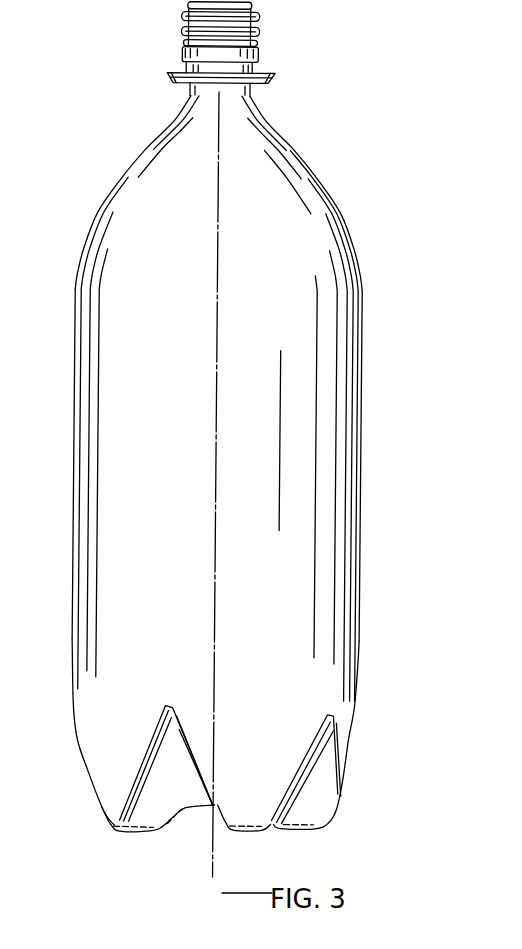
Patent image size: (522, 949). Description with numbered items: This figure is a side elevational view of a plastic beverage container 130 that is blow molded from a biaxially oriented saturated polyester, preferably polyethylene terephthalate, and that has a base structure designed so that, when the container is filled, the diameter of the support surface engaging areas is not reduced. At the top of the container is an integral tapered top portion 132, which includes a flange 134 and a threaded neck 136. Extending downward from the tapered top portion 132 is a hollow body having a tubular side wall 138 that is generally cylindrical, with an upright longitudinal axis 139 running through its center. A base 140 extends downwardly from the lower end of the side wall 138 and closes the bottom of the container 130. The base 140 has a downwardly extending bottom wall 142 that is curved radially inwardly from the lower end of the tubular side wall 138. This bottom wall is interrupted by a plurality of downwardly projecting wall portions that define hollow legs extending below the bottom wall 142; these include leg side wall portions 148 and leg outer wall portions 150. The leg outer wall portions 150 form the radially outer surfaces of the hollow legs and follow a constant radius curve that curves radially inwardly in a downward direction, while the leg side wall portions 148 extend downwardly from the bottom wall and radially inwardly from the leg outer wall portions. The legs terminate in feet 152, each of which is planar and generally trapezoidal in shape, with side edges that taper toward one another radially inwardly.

The plastic beverage container 130 is at (392, 418).
The tapered top portion 132 is at (282, 138).
The flange 134 is at (275, 79).
The threaded neck 136 is at (258, 25).
The tubular side wall 138 is at (362, 378).
The upright longitudinal axis 139 is at (217, 468).
The base 140 is at (360, 786).
The bottom wall 142 is at (170, 742).
The leg side wall portions 148 is at (158, 772).
The leg outer wall portions 150 is at (108, 785).
The feet 152 is at (299, 832).